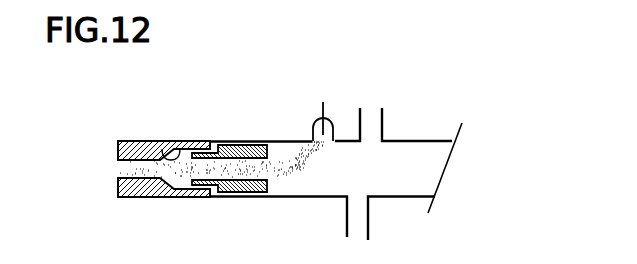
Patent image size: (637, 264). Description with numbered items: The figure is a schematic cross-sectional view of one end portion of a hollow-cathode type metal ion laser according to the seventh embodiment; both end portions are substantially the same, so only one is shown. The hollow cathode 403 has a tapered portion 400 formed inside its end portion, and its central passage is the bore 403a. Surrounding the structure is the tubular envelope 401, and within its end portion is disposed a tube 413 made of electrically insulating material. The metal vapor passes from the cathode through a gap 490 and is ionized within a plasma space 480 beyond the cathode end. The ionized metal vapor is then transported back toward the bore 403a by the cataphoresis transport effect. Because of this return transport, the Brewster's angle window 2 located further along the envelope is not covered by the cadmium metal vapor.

The Brewster's angle window 2 is at (450, 162).
The tapered portion 400 is at (178, 141).
The tubular envelope 401 is at (293, 140).
The hollow cathode 403 is at (140, 141).
The bore 403a is at (132, 198).
The tube 413 is at (247, 198).
The plasma space 480 is at (303, 175).
The gap 490 is at (250, 145).